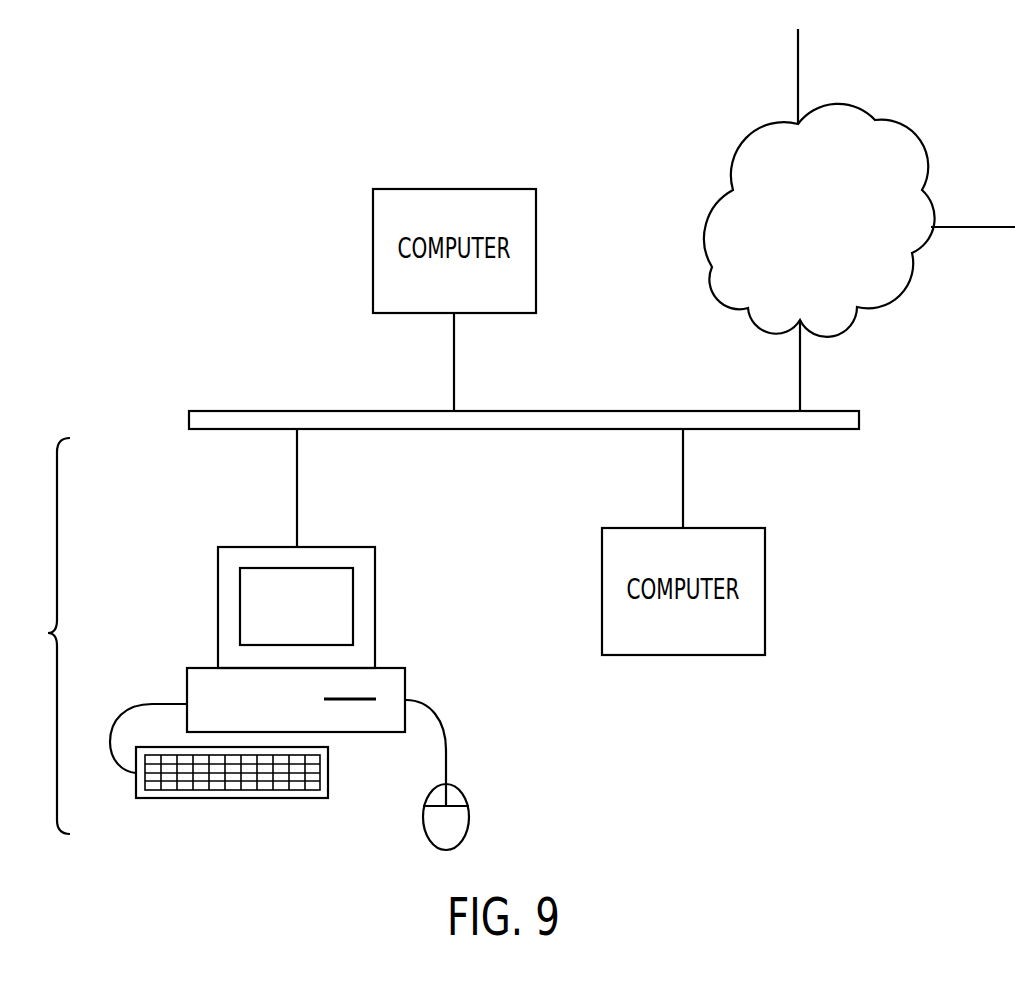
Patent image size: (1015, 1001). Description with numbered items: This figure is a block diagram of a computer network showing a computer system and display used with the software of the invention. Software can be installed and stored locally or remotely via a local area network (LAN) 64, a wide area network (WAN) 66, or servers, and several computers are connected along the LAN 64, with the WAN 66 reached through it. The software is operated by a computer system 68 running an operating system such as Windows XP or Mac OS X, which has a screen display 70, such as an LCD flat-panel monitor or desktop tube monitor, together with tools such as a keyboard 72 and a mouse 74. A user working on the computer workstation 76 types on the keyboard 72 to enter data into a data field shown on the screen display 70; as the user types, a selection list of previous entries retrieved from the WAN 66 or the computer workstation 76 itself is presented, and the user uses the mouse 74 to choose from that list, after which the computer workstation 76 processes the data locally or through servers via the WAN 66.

The local area network (LAN) 64 is at (860, 425).
The wide area network (WAN) 66 is at (927, 145).
The computer system 68 is at (226, 509).
The screen display 70 is at (252, 608).
The keyboard 72 is at (218, 800).
The mouse 74 is at (471, 817).
The computer workstation 76 is at (276, 649).